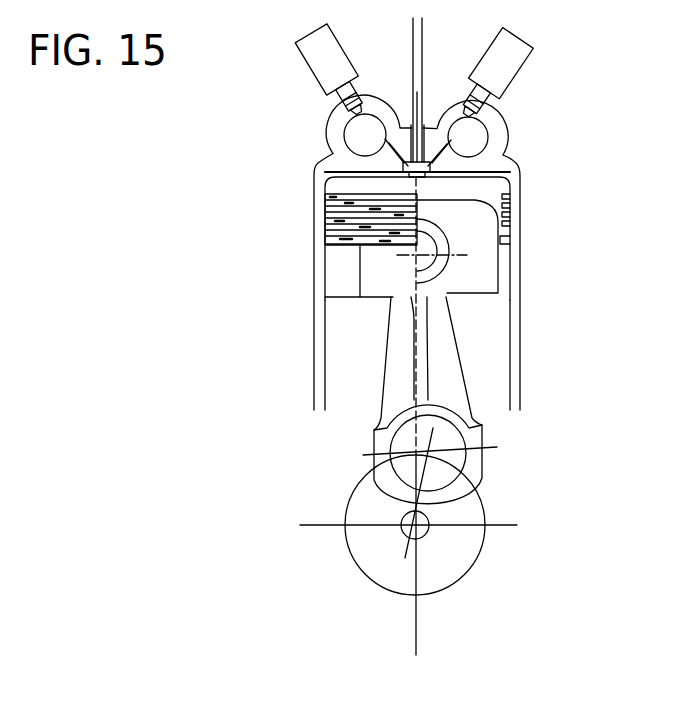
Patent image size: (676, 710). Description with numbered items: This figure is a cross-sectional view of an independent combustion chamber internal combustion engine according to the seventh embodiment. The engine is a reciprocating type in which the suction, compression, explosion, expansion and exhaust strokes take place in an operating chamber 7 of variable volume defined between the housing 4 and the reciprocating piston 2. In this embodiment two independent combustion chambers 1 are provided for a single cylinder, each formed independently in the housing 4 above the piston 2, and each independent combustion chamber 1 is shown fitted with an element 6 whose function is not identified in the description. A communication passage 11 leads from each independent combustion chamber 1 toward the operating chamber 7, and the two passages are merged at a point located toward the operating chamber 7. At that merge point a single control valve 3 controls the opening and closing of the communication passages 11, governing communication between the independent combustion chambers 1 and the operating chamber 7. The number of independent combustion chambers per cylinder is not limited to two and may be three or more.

The independent combustion chamber 1 is at (350, 129).
The reciprocating piston 2 is at (493, 195).
The first control valve 3 is at (421, 71).
The housing 4 is at (517, 229).
The spark plug 6 is at (337, 57).
The operating chamber 7 is at (508, 158).
The communication passage 11 is at (403, 140).